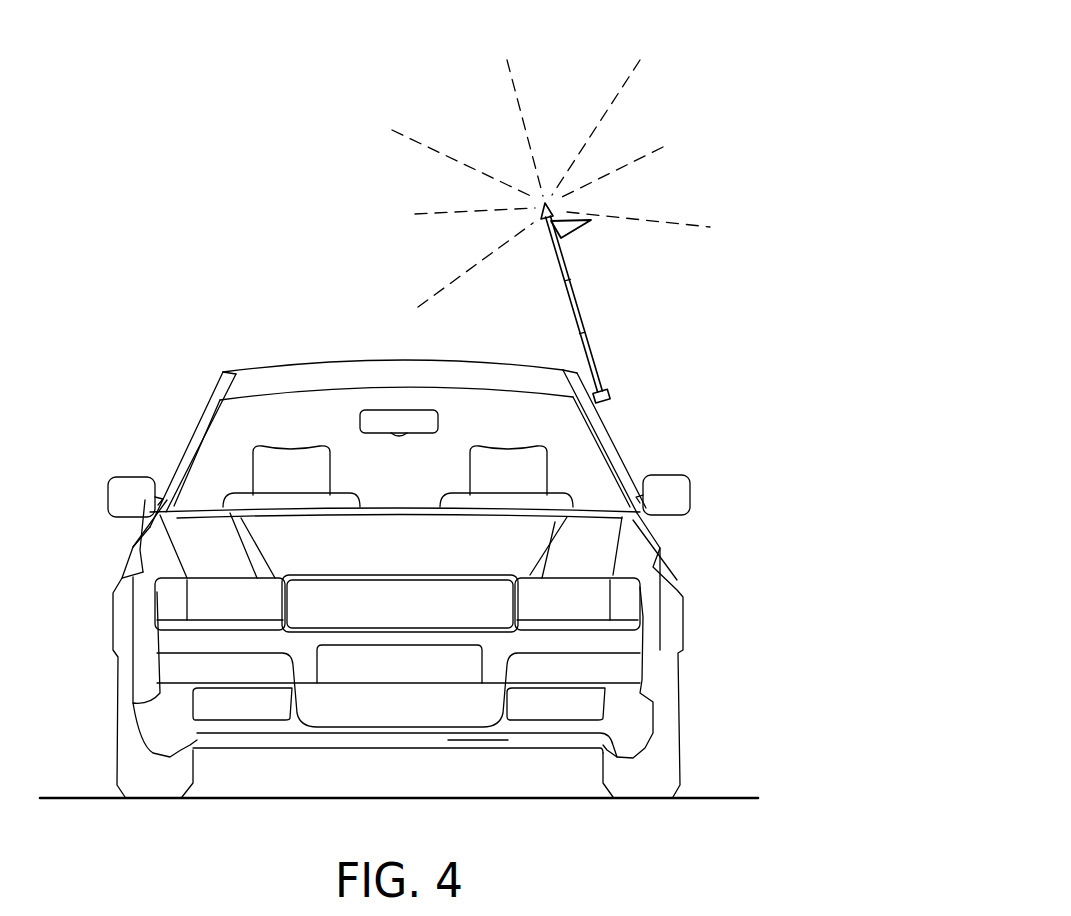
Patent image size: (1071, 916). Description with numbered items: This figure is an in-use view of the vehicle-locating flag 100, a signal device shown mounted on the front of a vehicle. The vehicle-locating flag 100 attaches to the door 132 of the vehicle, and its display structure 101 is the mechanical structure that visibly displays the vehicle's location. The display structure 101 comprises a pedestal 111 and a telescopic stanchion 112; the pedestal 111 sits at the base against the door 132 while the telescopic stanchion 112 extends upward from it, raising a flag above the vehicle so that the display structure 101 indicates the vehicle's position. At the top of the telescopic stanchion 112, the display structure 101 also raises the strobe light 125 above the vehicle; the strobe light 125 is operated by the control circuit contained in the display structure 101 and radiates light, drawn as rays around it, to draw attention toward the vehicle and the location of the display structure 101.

The vehicle-locating flag 100 is at (610, 360).
The display structure 101 is at (687, 623).
The pedestal 111 is at (609, 398).
The telescopic stanchion 112 is at (600, 330).
The strobe light 125 is at (584, 185).
The door 132 is at (653, 532).